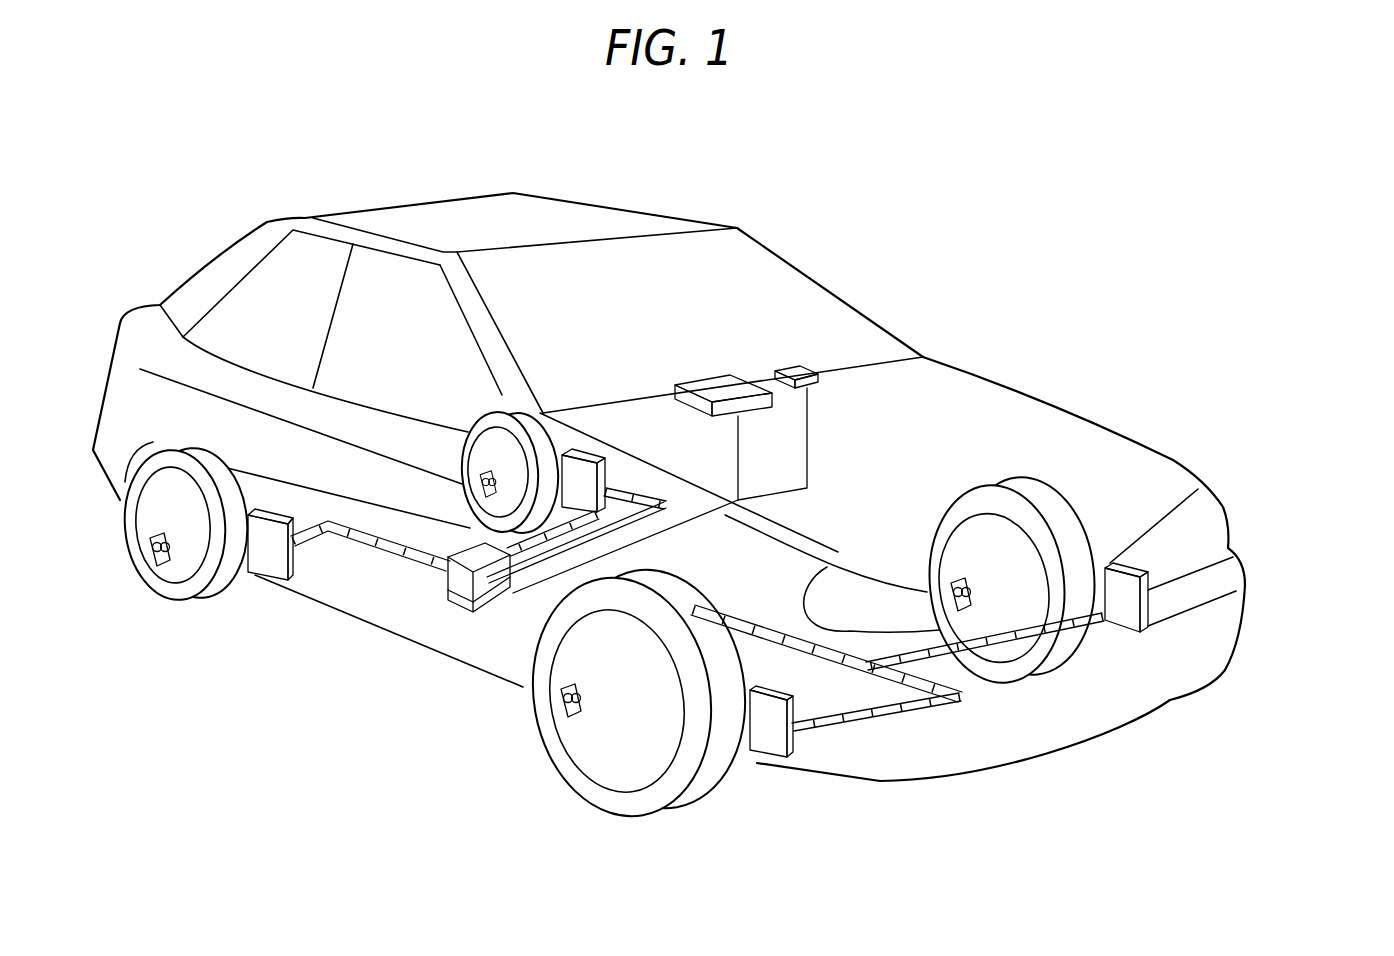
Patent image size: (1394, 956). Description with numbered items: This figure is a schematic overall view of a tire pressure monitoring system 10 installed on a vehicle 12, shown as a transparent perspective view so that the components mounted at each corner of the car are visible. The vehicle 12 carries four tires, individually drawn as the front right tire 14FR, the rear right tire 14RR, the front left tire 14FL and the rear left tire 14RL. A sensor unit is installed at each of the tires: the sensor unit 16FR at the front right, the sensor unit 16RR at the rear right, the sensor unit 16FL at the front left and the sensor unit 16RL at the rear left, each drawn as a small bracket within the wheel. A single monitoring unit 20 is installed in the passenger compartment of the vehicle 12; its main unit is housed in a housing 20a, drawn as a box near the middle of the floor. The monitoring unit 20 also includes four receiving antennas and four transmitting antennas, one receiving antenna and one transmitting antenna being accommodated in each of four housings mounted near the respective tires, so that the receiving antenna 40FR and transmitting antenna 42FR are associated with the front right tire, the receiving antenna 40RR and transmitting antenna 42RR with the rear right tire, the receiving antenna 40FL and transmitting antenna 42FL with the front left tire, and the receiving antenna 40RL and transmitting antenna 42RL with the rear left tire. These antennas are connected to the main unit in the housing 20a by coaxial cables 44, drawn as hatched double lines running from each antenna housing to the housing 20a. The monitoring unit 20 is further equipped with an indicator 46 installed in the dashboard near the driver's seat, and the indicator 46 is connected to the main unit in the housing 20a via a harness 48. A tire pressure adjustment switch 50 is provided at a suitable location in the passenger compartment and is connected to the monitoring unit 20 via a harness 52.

The tire pressure monitoring system 10 is at (669, 470).
The vehicle 12 is at (677, 215).
The rear right tire 14RR is at (212, 595).
The rear left tire 14RL is at (481, 418).
The front right tire 14FR is at (698, 793).
The front left tire 14FL is at (1067, 663).
The rear right sensor unit 16RR is at (150, 540).
The rear left sensor unit 16RL is at (480, 472).
The front right sensor unit 16FR is at (562, 712).
The front left sensor unit 16FL is at (958, 583).
The monitoring unit 20 is at (439, 629).
The housing 20a is at (460, 607).
The rear right receiving antenna 40RR is at (283, 594).
The rear right transmitting antenna 42RR is at (262, 575).
The rear left receiving antenna 40RL is at (592, 432).
The rear left transmitting antenna 42RL is at (572, 449).
The front right receiving antenna 40FR is at (806, 757).
The front right transmitting antenna 42FR is at (757, 765).
The front left receiving antenna 40FL is at (1236, 570).
The front left transmitting antenna 42FL is at (1148, 574).
The coaxial cables 44 is at (313, 542).
The indicator 46 is at (698, 383).
The harness 48 is at (740, 455).
The tire pressure adjustment switch 50 is at (786, 370).
The harness 52 is at (808, 468).